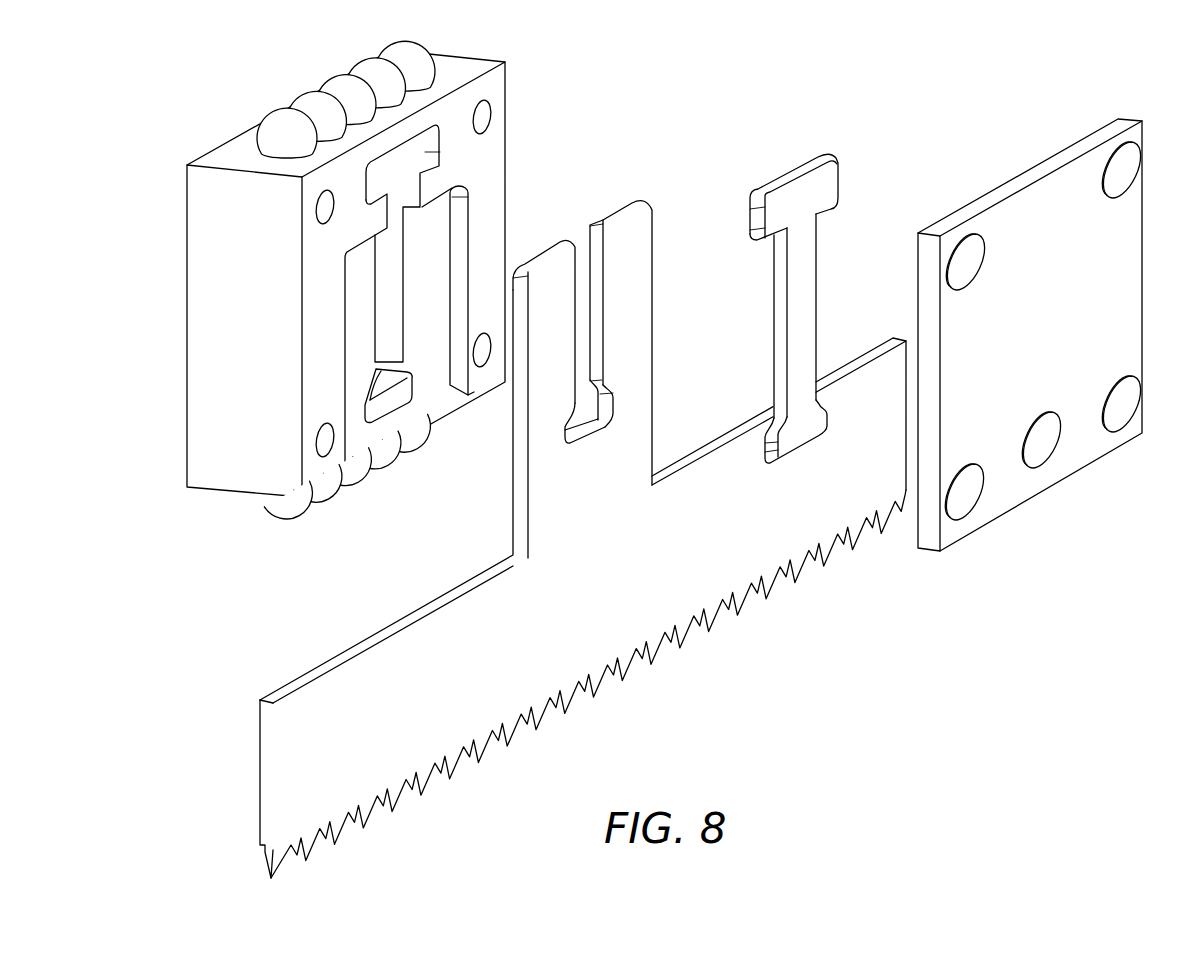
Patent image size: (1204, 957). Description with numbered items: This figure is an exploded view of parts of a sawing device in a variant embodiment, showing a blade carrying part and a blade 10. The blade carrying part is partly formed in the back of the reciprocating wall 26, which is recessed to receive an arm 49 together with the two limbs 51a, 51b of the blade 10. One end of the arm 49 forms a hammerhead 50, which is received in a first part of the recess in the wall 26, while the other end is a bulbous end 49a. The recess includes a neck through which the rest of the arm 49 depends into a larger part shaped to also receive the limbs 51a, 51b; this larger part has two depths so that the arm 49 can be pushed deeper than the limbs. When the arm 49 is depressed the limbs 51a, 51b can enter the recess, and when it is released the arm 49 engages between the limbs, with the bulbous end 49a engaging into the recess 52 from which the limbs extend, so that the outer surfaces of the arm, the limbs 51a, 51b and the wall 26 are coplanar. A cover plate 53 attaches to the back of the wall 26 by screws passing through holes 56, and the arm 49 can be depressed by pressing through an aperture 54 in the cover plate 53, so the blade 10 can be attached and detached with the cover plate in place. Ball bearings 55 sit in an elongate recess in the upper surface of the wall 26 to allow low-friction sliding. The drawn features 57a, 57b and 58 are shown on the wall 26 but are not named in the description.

The blade 10 is at (524, 539).
The wall 26 is at (203, 283).
The arm 49 is at (810, 290).
The bulbous end 49a is at (817, 433).
The hammerhead 50 is at (832, 180).
The limb 51a is at (555, 268).
The limb 51b is at (640, 250).
The recess 52 is at (582, 415).
The cover plate 53 is at (1056, 342).
The aperture 54 is at (1042, 456).
The ball bearings 55 is at (277, 122).
The holes 56 is at (1127, 161).
The upper slot 57a is at (413, 152).
The lower slot 57b is at (437, 380).
The rollers 58 is at (287, 513).